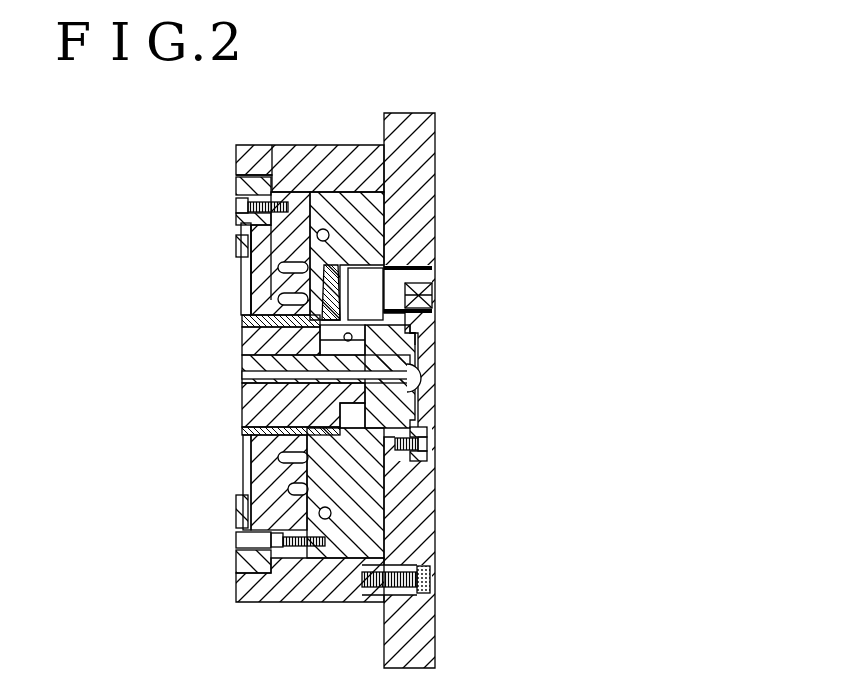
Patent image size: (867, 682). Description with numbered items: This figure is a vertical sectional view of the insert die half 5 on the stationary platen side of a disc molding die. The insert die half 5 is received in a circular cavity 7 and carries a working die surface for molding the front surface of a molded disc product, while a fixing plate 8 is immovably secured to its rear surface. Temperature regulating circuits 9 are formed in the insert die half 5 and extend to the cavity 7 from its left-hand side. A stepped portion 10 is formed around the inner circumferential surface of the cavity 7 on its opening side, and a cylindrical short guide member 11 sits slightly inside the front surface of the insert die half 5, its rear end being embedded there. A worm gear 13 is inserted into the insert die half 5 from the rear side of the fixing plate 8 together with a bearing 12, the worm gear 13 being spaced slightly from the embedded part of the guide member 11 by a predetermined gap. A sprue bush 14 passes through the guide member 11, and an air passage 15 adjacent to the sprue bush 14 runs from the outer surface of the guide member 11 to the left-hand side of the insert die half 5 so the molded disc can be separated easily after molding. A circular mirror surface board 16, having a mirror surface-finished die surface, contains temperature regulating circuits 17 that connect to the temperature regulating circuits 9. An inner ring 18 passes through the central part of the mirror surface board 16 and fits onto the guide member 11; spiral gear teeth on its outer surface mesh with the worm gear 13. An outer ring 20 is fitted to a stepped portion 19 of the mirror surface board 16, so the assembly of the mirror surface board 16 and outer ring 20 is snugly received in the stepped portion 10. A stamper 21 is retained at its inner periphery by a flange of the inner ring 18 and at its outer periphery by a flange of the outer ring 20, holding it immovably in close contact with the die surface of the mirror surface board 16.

The insert die half 5 is at (358, 162).
The circular cavity 7 is at (283, 190).
The fixing plate 8 is at (410, 520).
The temperature regulating circuits 9 is at (323, 229).
The stepped portion 10 is at (274, 174).
The cylindrical short guide member 11 is at (257, 345).
The bearing 12 is at (400, 283).
The worm gear 13 is at (345, 266).
The sprue bush 14 is at (383, 403).
The air passage 15 is at (410, 347).
The circular mirror surface board 16 is at (267, 277).
The temperature regulating circuits 17 is at (290, 487).
The inner ring 18 is at (270, 423).
The stepped portion 19 is at (252, 240).
The outer ring 20 is at (245, 193).
The stamper 21 is at (243, 463).